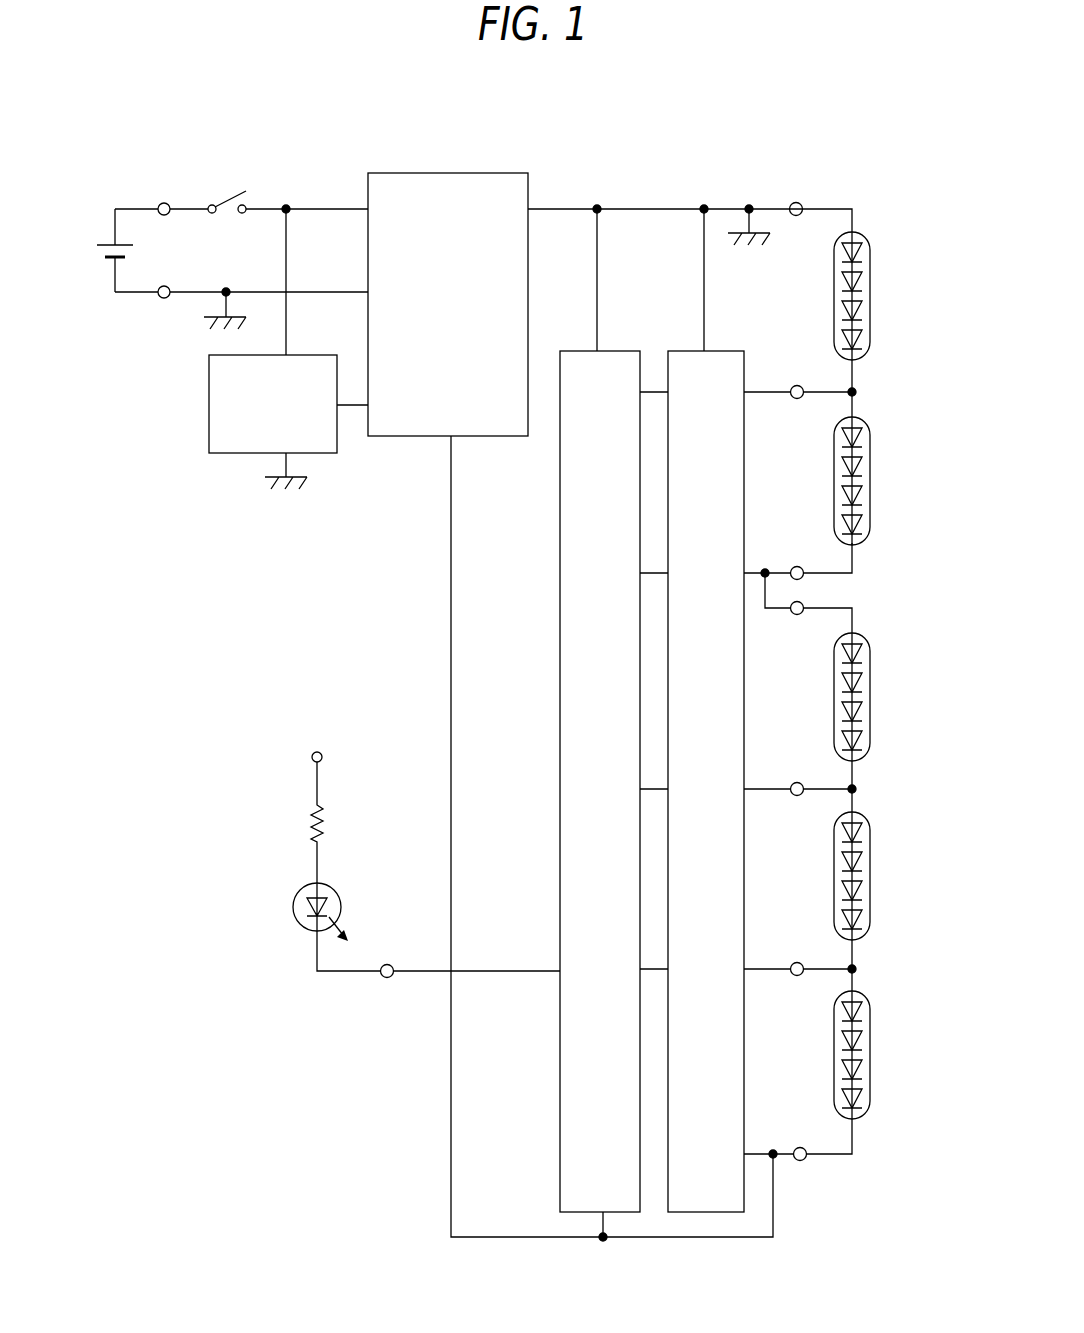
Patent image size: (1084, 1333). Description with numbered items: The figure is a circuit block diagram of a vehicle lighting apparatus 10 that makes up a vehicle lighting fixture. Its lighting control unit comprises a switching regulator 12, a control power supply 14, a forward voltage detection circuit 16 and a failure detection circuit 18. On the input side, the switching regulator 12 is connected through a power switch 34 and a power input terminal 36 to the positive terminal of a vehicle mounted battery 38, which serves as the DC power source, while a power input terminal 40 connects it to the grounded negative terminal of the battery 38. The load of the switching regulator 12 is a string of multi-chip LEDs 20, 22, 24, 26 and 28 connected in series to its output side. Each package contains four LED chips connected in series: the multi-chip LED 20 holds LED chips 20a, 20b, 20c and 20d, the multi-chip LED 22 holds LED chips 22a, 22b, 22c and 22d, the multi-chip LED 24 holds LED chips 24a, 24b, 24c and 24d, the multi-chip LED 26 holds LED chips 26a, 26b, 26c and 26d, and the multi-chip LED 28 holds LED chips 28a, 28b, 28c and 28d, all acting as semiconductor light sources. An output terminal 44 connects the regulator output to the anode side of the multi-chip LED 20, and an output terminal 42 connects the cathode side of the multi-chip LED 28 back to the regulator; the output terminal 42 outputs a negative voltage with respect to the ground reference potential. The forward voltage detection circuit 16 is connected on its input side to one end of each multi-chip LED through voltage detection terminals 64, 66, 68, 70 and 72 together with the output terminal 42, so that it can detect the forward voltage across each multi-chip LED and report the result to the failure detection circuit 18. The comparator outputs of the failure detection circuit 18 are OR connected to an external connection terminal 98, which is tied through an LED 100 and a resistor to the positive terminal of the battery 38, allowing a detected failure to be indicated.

The vehicle lighting apparatus 10 is at (685, 141).
The switching regulator 12 is at (494, 173).
The control power supply 14 is at (256, 454).
The forward voltage detection circuit 16 is at (722, 351).
The failure detection circuit 18 is at (614, 351).
The multi-chip LED 20 is at (868, 233).
The LED chip 20a is at (869, 251).
The LED chip 20b is at (869, 280).
The LED chip 20c is at (869, 308).
The LED chip 20d is at (869, 336).
The multi-chip LED 22 is at (868, 418).
The LED chip 22a is at (869, 436).
The LED chip 22b is at (869, 465).
The LED chip 22c is at (869, 494).
The LED chip 22d is at (869, 523).
The multi-chip LED 24 is at (868, 634).
The LED chip 24a is at (869, 652).
The LED chip 24b is at (869, 681).
The LED chip 24c is at (869, 710).
The LED chip 24d is at (869, 739).
The multi-chip LED 26 is at (868, 813).
The LED chip 26a is at (869, 831).
The LED chip 26b is at (869, 860).
The LED chip 26c is at (869, 889).
The LED chip 26d is at (869, 918).
The multi-chip LED 28 is at (870, 992).
The LED chip 28a is at (869, 1010).
The LED chip 28b is at (869, 1039).
The LED chip 28c is at (869, 1068).
The LED chip 28d is at (869, 1097).
The power switch 34 is at (235, 193).
The power input terminal 36 is at (167, 203).
The vehicle mounted battery 38 is at (100, 245).
The power input terminal 40 is at (164, 298).
The output terminal 42 is at (800, 1160).
The output terminal 44 is at (797, 203).
The voltage detection terminal 64 is at (797, 386).
The voltage detection terminal 66 is at (797, 567).
The voltage detection terminal 68 is at (797, 614).
The voltage detection terminal 70 is at (797, 783).
The voltage detection terminal 72 is at (797, 963).
The external connection terminal 98 is at (387, 977).
The LED 100 is at (293, 907).